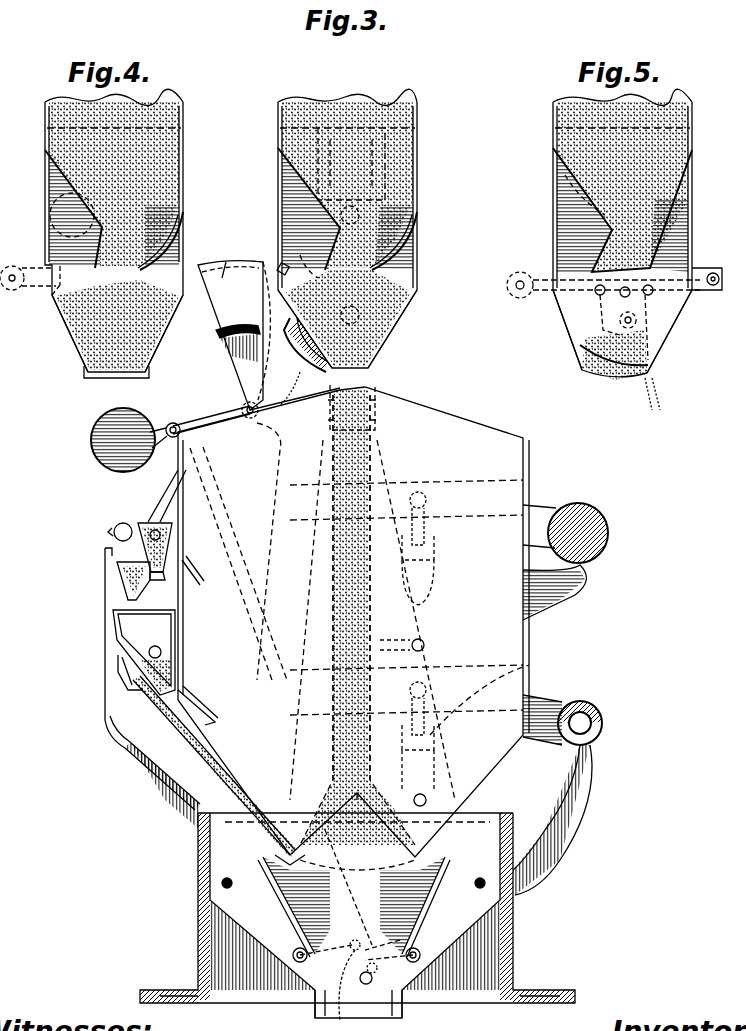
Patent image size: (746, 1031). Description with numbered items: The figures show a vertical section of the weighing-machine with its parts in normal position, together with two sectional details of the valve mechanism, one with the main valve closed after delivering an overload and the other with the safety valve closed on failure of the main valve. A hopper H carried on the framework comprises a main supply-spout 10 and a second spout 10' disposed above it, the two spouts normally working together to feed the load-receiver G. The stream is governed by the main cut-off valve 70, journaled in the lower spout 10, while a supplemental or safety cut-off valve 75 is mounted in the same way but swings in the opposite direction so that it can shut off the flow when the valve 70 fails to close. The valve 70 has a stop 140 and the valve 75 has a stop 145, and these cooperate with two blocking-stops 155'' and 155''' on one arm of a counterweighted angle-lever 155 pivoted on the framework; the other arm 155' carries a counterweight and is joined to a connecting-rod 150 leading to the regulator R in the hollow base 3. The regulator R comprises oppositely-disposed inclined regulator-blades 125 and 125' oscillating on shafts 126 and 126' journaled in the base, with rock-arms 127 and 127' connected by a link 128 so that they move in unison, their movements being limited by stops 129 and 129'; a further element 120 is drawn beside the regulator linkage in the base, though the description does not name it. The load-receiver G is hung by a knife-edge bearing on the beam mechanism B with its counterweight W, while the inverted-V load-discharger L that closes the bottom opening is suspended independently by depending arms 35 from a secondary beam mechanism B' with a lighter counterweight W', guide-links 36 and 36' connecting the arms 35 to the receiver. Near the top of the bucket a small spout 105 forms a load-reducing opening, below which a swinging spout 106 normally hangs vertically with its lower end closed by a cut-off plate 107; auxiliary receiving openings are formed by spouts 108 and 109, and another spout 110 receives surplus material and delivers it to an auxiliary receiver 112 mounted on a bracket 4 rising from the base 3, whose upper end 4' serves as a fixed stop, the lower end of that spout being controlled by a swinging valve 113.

In FIG. 4, the hopper H is at (98, 230).
In FIG. 5, the hopper H is at (634, 234).
In FIG. 3, the hopper H is at (359, 228).
In FIG. 4, the main supply-spout 10 is at (111, 333).
In FIG. 5, the main supply-spout 10 is at (631, 331).
In FIG. 3, the main supply-spout 10 is at (357, 329).
In FIG. 4, the second spout 10' is at (60, 222).
In FIG. 5, the second spout 10' is at (638, 210).
In FIG. 3, the second spout 10' is at (309, 213).
In FIG. 4, the supplemental or safety cut-off valve 75 is at (160, 250).
In FIG. 5, the supplemental or safety cut-off valve 75 is at (628, 292).
In FIG. 3, the supplemental or safety cut-off valve 75 is at (405, 230).
In FIG. 4, the main cut-off valve 70 is at (96, 376).
In FIG. 5, the main cut-off valve 70 is at (616, 376).
In FIG. 3, the main cut-off valve 70 is at (300, 348).
In FIG. 3, the stop 145 is at (280, 266).
In FIG. 3, the stop 140 is at (262, 300).
In FIG. 3, the counterweighted angle-lever 155 is at (263, 391).
In FIG. 3, the arm of angle-lever 155' is at (206, 413).
In FIG. 3, the blocking-stop 155'' is at (218, 255).
In FIG. 3, the blocking-stop 155''' is at (215, 343).
In FIG. 3, the small spout 105 is at (168, 495).
In FIG. 3, the spout 108 is at (195, 575).
In FIG. 3, the swinging spout 106 is at (142, 542).
In FIG. 3, the upper end of bracket 4' is at (77, 634).
In FIG. 3, the spout 110 is at (118, 575).
In FIG. 3, the cut-off plate 107 is at (150, 576).
In FIG. 3, the auxiliary receiver 112 is at (140, 626).
In FIG. 3, the swinging valve 113 is at (132, 668).
In FIG. 3, the spout 109 is at (205, 700).
In FIG. 3, the connecting-rod 150 is at (268, 705).
In FIG. 3, the bracket 4 is at (147, 773).
In FIG. 3, the load-receiver G is at (353, 621).
In FIG. 3, the depending arms or rods 35 is at (340, 720).
In FIG. 3, the guide-links 36 is at (407, 571).
In FIG. 3, the guide-links 36' is at (404, 744).
In FIG. 3, the beam mechanism B is at (554, 551).
In FIG. 3, the counterweight W is at (589, 533).
In FIG. 3, the secondary beam mechanism B' is at (552, 782).
In FIG. 3, the counterweight W' is at (593, 723).
In FIG. 3, the load-discharger L is at (324, 829).
In FIG. 3, the regulator R is at (401, 914).
In FIG. 3, the supporting-base 3 is at (513, 928).
In FIG. 3, the regulator-blade 125 is at (294, 905).
In FIG. 3, the regulator-blade 125' is at (415, 907).
In FIG. 3, the shaft 126 is at (272, 985).
In FIG. 3, the shaft 126' is at (440, 963).
In FIG. 3, the rock-arm 127 is at (330, 934).
In FIG. 3, the rock-arm 127' is at (369, 895).
In FIG. 3, the stop 129 is at (229, 870).
In FIG. 3, the stop 129' is at (475, 860).
In FIG. 3, the ball 120 is at (364, 990).
In FIG. 3, the link 128 is at (320, 1000).